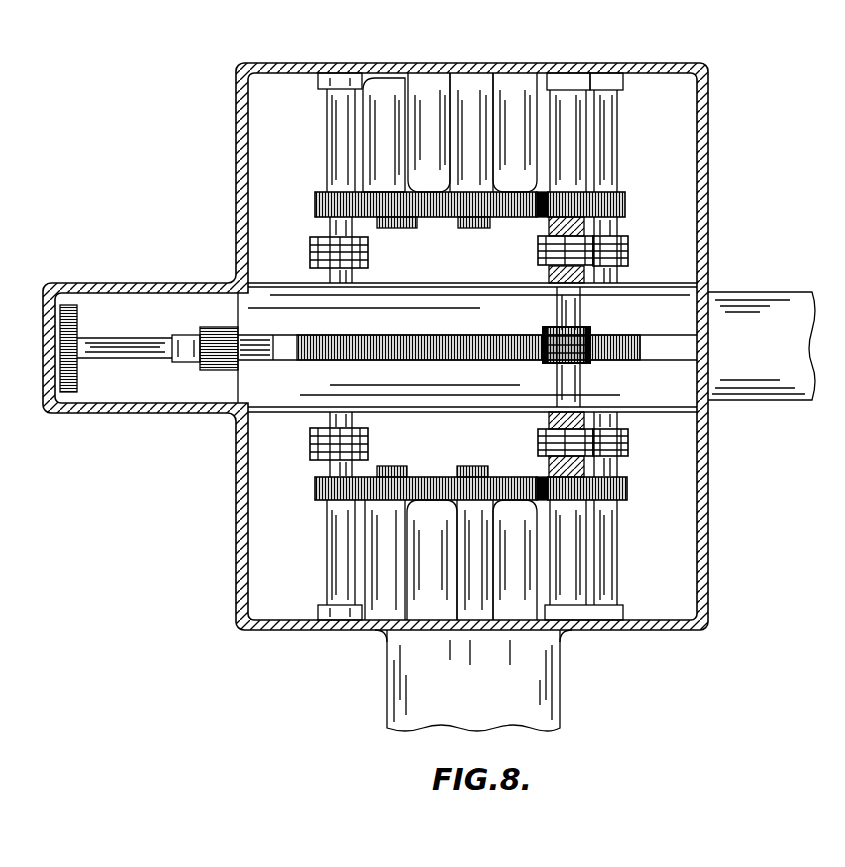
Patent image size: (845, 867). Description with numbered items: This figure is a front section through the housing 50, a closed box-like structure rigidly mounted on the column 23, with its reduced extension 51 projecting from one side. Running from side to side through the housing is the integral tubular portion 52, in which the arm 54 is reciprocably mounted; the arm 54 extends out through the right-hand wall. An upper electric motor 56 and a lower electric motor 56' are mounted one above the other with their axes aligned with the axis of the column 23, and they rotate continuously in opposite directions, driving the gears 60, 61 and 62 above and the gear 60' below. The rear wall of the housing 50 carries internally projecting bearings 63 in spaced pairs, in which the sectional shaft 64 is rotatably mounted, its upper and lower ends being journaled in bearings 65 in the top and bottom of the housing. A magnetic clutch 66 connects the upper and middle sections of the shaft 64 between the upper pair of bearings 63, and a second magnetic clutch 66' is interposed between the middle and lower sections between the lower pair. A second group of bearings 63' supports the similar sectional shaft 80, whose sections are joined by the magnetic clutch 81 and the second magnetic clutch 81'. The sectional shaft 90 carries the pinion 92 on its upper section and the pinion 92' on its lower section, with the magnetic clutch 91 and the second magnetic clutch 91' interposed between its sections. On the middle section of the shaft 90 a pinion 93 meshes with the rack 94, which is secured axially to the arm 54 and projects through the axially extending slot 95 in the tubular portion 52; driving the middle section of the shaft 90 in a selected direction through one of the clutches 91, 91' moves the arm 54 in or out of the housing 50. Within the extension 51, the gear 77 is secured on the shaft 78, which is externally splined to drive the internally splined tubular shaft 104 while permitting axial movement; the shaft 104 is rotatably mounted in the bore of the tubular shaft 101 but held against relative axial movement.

The column 23 is at (540, 688).
The housing 50 is at (705, 182).
The housing extension 51 is at (143, 300).
The tubular portion 52 is at (495, 288).
The arm 54 is at (752, 300).
The upper electric motor 56 is at (472, 113).
The lower electric motor 56' is at (472, 581).
The gear 60 is at (416, 204).
The gear 60' is at (414, 492).
The gear 61 is at (628, 205).
The gear 62 is at (434, 210).
The bearings 63 is at (346, 349).
The bearings 63' is at (631, 345).
The sectional shaft 64 is at (335, 140).
The bearings 65 is at (322, 88).
The magnetic clutch 66 is at (323, 253).
The magnetic clutch 66' is at (317, 444).
The gear 77 is at (77, 325).
The shaft 78 is at (140, 358).
The sectional shaft 80 is at (612, 142).
The magnetic clutch 81 is at (629, 250).
The magnetic clutch 81' is at (631, 442).
The sectional shaft 90 is at (568, 165).
The magnetic clutch 91 is at (549, 250).
The magnetic clutch 91' is at (548, 442).
The pinion 92 is at (545, 248).
The pinion 92' is at (546, 444).
The pinion 93 is at (588, 337).
The rack 94 is at (345, 358).
The slot 95 is at (655, 345).
The tubular shaft 101 is at (222, 332).
The tubular shaft 104 is at (188, 338).